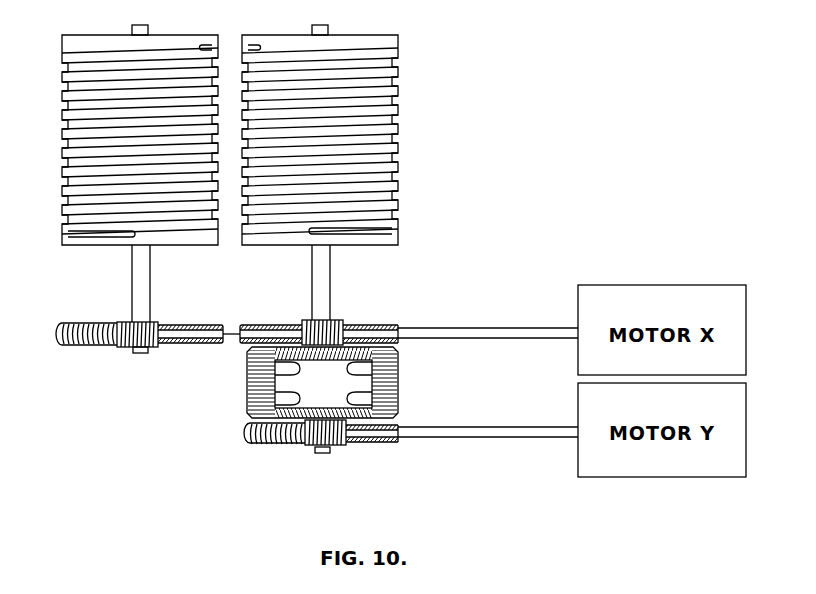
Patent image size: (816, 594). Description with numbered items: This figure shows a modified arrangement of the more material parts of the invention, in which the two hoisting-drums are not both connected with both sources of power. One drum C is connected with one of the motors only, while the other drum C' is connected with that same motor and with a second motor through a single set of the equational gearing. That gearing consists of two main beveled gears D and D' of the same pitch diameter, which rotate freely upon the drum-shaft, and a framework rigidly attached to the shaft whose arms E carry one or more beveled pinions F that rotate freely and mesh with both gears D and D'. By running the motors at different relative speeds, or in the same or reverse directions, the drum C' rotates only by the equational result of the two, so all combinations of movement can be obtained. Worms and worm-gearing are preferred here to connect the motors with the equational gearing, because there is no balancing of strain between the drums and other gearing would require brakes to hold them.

The hoisting-drum C' is at (127, 173).
The hoisting-drum C is at (330, 172).
The beveled gear D' is at (287, 369).
The beveled gear D is at (287, 399).
The arms E is at (326, 383).
The beveled pinion F is at (242, 393).